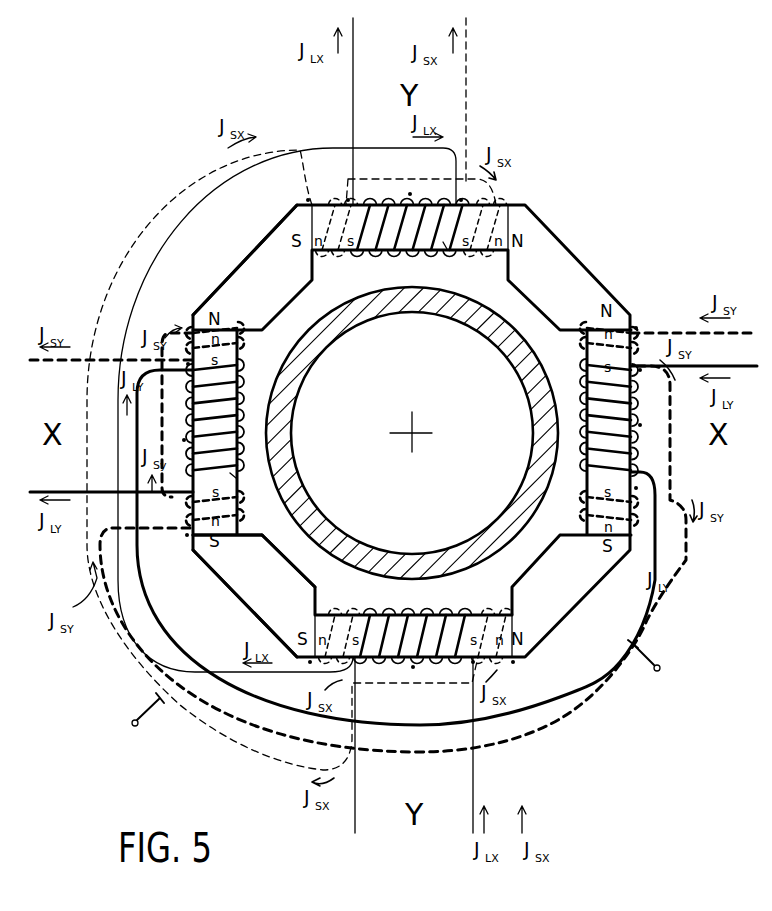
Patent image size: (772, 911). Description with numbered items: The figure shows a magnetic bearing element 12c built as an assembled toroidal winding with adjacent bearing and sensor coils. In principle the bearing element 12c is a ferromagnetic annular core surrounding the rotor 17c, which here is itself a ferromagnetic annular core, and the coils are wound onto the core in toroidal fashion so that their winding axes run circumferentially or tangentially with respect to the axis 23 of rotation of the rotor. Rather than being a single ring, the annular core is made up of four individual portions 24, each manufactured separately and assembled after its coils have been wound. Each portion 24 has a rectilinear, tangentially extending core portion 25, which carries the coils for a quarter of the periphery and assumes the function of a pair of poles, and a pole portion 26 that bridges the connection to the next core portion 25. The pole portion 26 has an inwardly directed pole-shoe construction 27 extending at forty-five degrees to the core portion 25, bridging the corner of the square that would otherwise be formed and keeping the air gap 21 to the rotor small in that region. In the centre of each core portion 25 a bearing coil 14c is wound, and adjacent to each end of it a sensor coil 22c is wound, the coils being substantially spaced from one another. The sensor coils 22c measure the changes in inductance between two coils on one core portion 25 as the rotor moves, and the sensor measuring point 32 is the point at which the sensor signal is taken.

The bearing element 12c is at (236, 619).
The bearing coil 14c is at (393, 252).
The rotor 17c is at (342, 532).
The air gap 21 is at (360, 552).
The sensor coil 22c is at (337, 252).
The axis of rotation 23 is at (412, 433).
The portion 24 is at (277, 302).
The core portion 25 is at (443, 242).
The pole portion 26 is at (280, 576).
The pole-shoe construction 27 is at (266, 548).
The sensor measuring point 32 is at (658, 672).